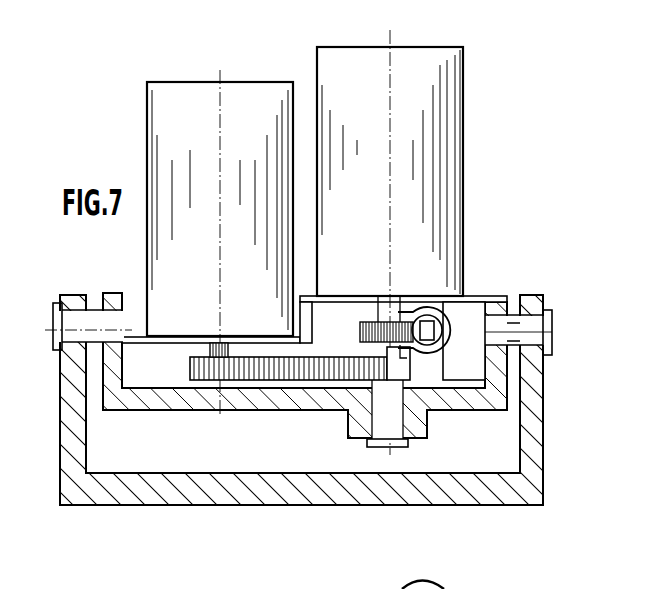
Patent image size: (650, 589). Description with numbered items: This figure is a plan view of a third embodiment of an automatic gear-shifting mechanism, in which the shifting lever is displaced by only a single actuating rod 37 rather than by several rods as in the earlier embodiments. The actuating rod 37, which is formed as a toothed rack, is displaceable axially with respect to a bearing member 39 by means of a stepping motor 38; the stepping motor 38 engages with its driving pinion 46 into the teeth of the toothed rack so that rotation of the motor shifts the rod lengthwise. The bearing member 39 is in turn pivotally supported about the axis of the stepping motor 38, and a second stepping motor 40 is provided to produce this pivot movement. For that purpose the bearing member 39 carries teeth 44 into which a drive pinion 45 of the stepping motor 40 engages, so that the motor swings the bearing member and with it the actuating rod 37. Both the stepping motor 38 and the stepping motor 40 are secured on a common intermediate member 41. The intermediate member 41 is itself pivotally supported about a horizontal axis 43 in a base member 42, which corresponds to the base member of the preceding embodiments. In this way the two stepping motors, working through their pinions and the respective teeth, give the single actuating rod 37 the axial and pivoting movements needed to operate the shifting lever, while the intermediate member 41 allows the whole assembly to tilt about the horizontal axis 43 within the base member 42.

The actuating rod 37 is at (447, 332).
The stepping motor 38 is at (437, 62).
The bearing member 39 is at (435, 375).
The stepping motor 40 is at (195, 95).
The intermediate member 41 is at (112, 368).
The base member 42 is at (177, 495).
The horizontal axis 43 is at (552, 332).
The teeth 44 is at (338, 385).
The drive pinion 45 is at (219, 340).
The driving pinion 46 is at (364, 318).